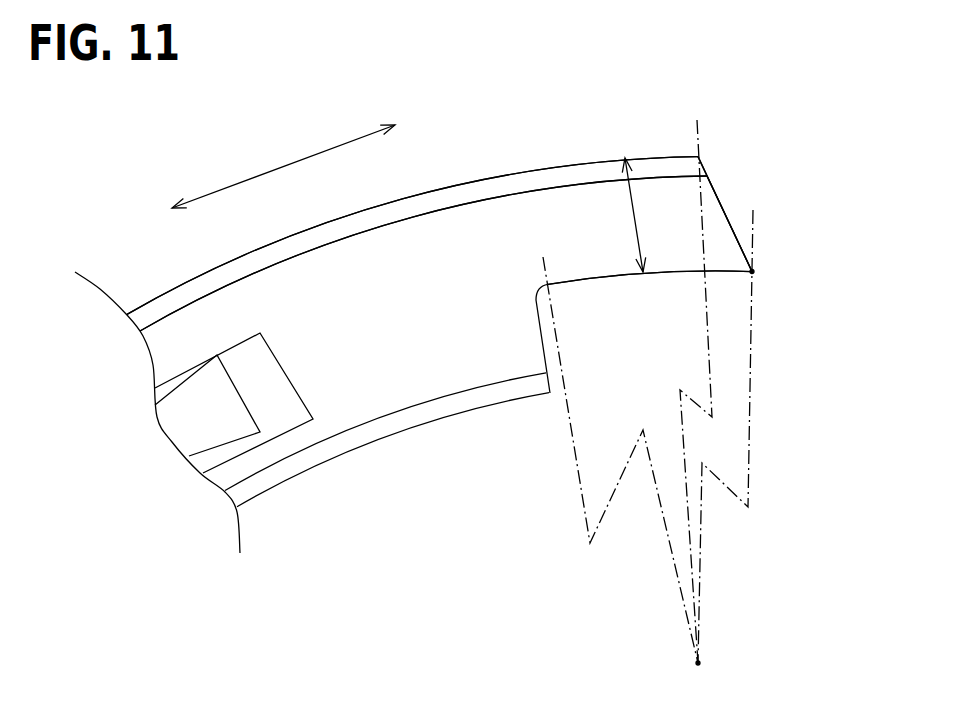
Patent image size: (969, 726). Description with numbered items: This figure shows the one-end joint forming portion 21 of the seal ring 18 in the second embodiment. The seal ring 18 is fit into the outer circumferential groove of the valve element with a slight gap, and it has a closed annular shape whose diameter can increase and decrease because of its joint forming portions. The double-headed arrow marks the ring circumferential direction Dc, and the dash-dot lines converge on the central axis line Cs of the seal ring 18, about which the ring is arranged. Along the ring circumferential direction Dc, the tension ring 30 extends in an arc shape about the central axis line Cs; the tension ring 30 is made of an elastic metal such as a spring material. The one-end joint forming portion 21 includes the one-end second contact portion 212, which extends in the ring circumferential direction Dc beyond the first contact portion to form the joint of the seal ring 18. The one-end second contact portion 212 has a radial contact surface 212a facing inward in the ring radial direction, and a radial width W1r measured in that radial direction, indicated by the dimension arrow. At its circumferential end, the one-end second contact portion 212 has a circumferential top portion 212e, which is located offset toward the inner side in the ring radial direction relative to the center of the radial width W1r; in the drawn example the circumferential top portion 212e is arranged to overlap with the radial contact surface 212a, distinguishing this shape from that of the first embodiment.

The seal ring 18 is at (330, 213).
The one-end joint forming portion 21 is at (677, 157).
The tension ring 30 is at (185, 428).
The one-end second contact portion 212 is at (665, 197).
The radial contact surface 212a is at (683, 275).
The circumferential top portion 212e is at (753, 271).
The ring circumferential direction Dc is at (270, 165).
The radial width W1r is at (633, 225).
The central axis line Cs is at (702, 663).